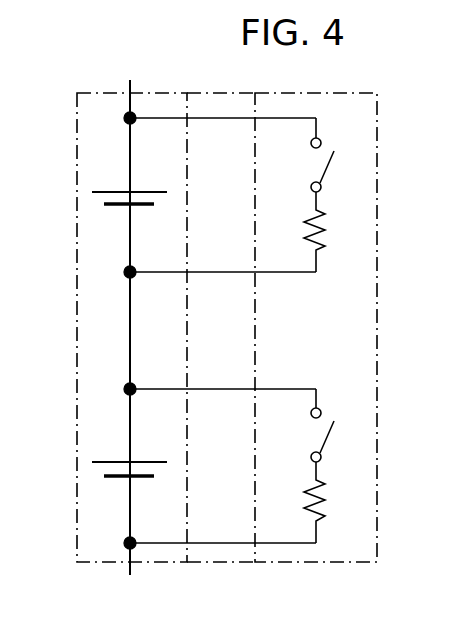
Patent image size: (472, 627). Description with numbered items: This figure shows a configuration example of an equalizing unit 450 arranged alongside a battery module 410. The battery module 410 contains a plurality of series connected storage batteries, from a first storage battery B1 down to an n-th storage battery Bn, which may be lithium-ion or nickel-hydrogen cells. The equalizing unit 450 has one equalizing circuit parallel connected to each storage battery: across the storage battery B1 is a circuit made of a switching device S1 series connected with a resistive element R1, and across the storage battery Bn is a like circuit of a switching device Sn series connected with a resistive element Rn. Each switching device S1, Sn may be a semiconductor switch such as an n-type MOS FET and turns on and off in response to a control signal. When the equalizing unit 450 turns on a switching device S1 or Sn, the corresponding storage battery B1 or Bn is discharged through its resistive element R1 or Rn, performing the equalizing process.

The battery module 410 is at (163, 93).
The equalizing unit 450 is at (355, 93).
The storage battery B1 is at (129, 181).
The storage battery Bn is at (129, 455).
The switching device S1 is at (333, 156).
The switching device Sn is at (333, 427).
The resistive element R1 is at (330, 232).
The resistive element Rn is at (330, 502).